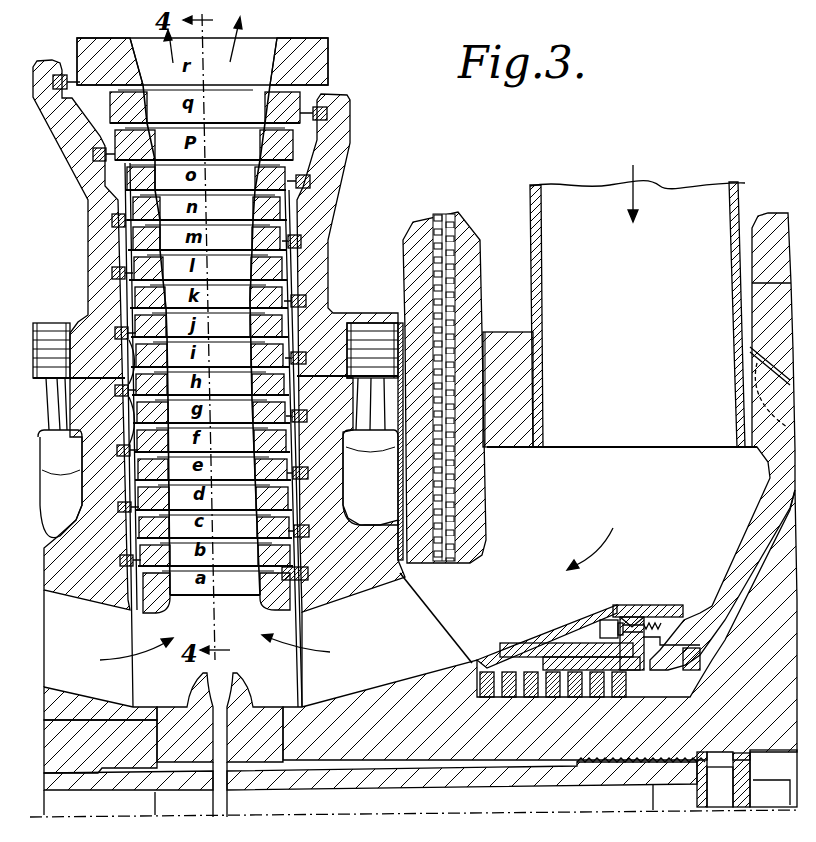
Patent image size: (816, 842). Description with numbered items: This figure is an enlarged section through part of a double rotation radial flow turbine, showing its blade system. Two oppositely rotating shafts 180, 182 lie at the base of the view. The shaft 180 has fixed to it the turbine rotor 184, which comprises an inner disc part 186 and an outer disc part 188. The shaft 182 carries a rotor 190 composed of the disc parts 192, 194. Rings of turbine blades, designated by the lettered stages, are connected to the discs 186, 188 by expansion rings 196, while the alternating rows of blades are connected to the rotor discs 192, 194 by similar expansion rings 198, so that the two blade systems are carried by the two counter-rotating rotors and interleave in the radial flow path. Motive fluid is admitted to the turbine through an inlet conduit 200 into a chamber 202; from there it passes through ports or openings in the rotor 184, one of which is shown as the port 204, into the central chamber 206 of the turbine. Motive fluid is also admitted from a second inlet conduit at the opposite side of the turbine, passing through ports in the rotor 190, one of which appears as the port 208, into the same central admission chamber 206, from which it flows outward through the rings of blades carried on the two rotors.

The shaft 180 is at (469, 784).
The shaft 182 is at (130, 793).
The turbine rotor 184 is at (318, 702).
The inner disc part 186 is at (340, 497).
The outer disc part 188 is at (318, 221).
The rotor 190 is at (115, 707).
The disc part 192 is at (85, 500).
The disc part 194 is at (95, 264).
The expansion rings 196 is at (292, 250).
The expansion rings 198 is at (127, 423).
The inlet conduit 200 is at (680, 197).
The chamber 202 is at (622, 508).
The port 204 is at (427, 625).
The central chamber 206 is at (279, 634).
The port 208 is at (115, 636).